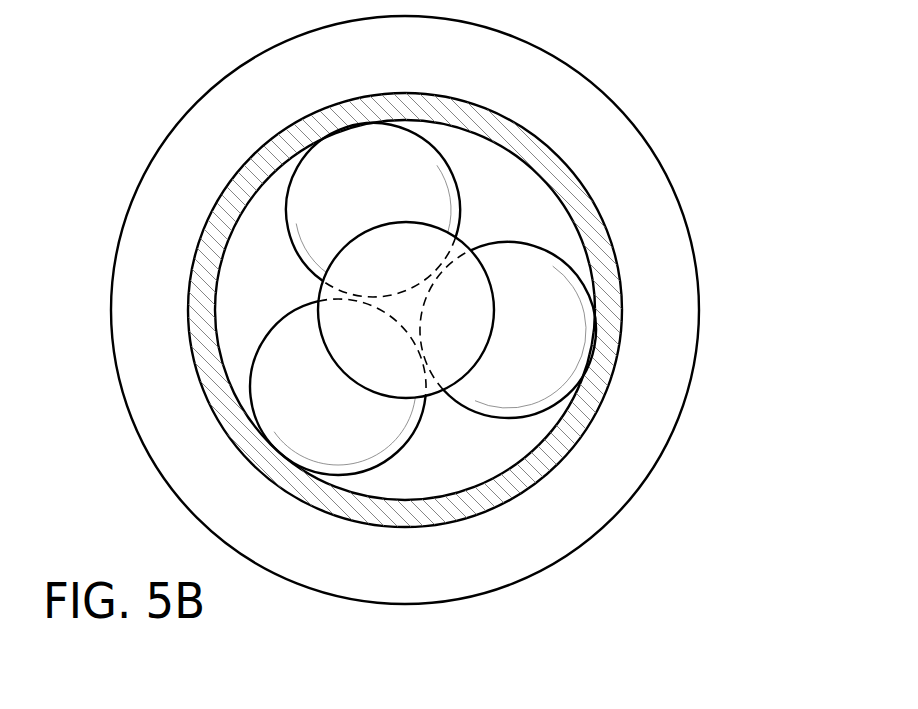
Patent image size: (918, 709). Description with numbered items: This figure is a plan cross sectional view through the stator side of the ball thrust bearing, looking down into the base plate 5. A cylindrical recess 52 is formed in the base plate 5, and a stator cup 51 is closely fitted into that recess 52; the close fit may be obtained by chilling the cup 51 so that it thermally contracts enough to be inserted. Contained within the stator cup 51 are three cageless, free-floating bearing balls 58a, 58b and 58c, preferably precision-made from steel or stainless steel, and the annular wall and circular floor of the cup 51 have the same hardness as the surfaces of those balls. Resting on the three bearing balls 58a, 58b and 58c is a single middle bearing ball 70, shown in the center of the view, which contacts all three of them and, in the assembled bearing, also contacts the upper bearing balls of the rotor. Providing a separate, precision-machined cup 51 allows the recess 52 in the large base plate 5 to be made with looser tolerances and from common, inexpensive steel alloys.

The base plate 5 is at (642, 188).
The stator cup 51 is at (492, 133).
The cylindrical recess 52 is at (534, 137).
The bearing ball 58a is at (333, 403).
The bearing ball 58b is at (553, 347).
The bearing ball 58c is at (390, 187).
The middle bearing ball 70 is at (400, 273).